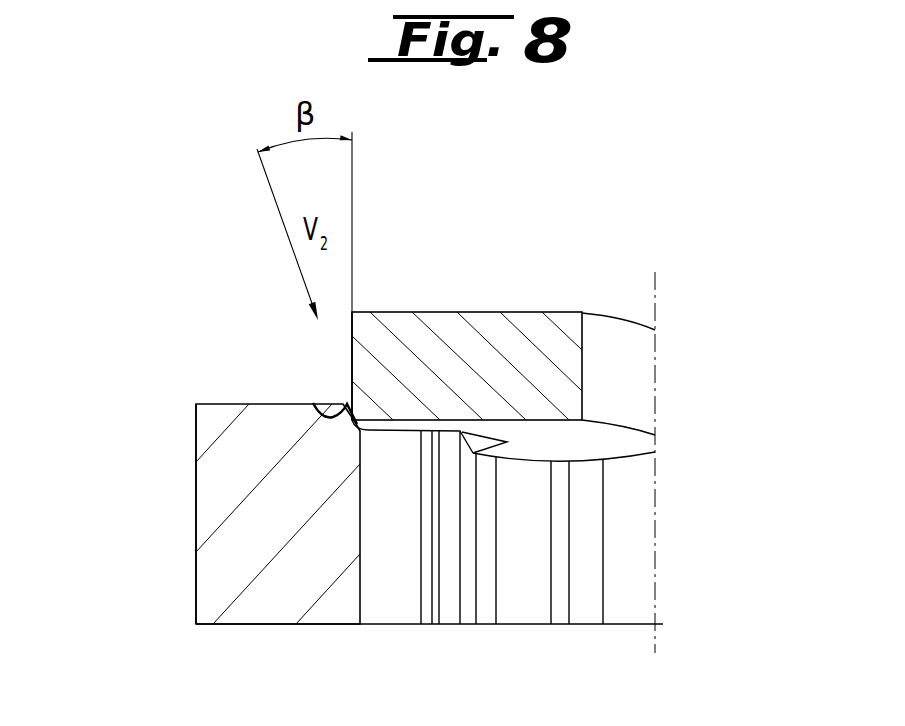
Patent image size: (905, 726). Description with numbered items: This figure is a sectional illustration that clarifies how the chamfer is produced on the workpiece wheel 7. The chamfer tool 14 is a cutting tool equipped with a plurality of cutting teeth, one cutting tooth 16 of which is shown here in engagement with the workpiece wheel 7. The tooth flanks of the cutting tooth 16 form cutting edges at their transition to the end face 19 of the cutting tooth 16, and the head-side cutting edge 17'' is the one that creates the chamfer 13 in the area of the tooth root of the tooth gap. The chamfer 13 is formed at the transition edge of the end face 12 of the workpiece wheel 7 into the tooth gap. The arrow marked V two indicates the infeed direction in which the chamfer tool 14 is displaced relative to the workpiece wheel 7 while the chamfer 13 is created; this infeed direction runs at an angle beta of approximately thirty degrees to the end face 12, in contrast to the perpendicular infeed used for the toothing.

The workpiece wheel 7 is at (182, 514).
The end face 12 is at (240, 404).
The chamfer 13 is at (313, 403).
The chamfer tool 14 is at (573, 306).
The cutting tooth 16 is at (500, 330).
The head-side cutting edge 17'' is at (414, 298).
The end face of the cutting tooth 19 is at (622, 443).